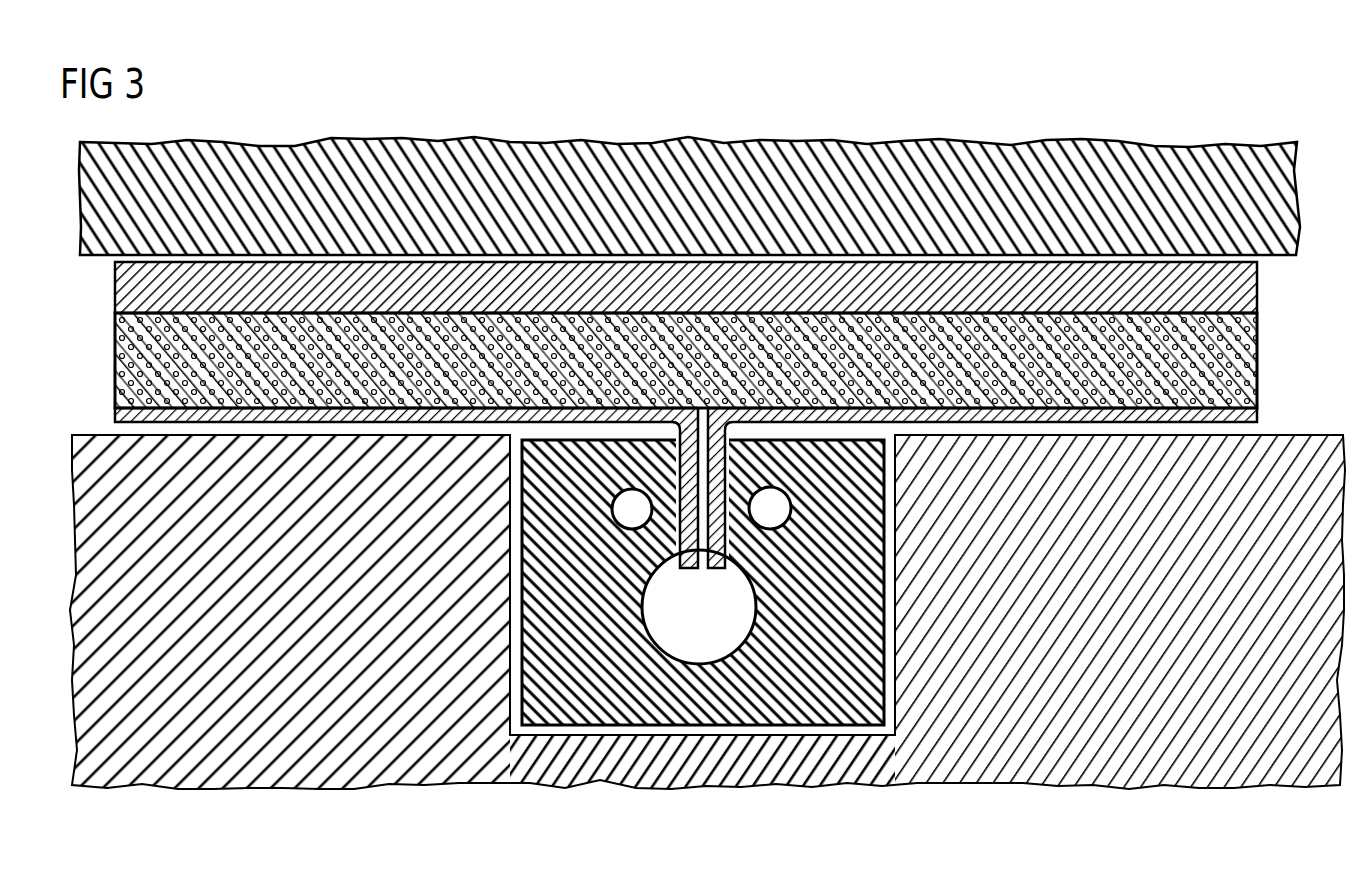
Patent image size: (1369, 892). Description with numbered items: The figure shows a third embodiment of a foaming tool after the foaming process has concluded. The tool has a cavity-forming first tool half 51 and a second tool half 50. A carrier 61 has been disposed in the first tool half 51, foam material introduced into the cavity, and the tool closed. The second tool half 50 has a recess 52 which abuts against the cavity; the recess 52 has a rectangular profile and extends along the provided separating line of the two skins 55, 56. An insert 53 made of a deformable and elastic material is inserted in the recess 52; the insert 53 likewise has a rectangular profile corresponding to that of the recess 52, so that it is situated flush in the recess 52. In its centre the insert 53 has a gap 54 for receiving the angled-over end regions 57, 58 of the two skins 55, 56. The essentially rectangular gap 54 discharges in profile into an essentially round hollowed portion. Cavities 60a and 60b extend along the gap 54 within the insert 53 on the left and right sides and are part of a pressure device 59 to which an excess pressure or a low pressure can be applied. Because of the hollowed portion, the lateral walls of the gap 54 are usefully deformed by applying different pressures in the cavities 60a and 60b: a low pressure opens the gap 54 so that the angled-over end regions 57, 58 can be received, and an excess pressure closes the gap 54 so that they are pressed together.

The second tool half 50 is at (1118, 780).
The first tool half 51 is at (1158, 150).
The recess 52 is at (656, 737).
The insert 53 is at (810, 708).
The gap 54 is at (728, 560).
The skin 55 is at (355, 422).
The skin 56 is at (1112, 422).
The angled-over end region 57 is at (682, 512).
The angled-over end region 58 is at (722, 512).
The pressure device 59 is at (607, 516).
The cavity 60a is at (613, 506).
The cavity 60b is at (792, 510).
The carrier 61 is at (115, 292).